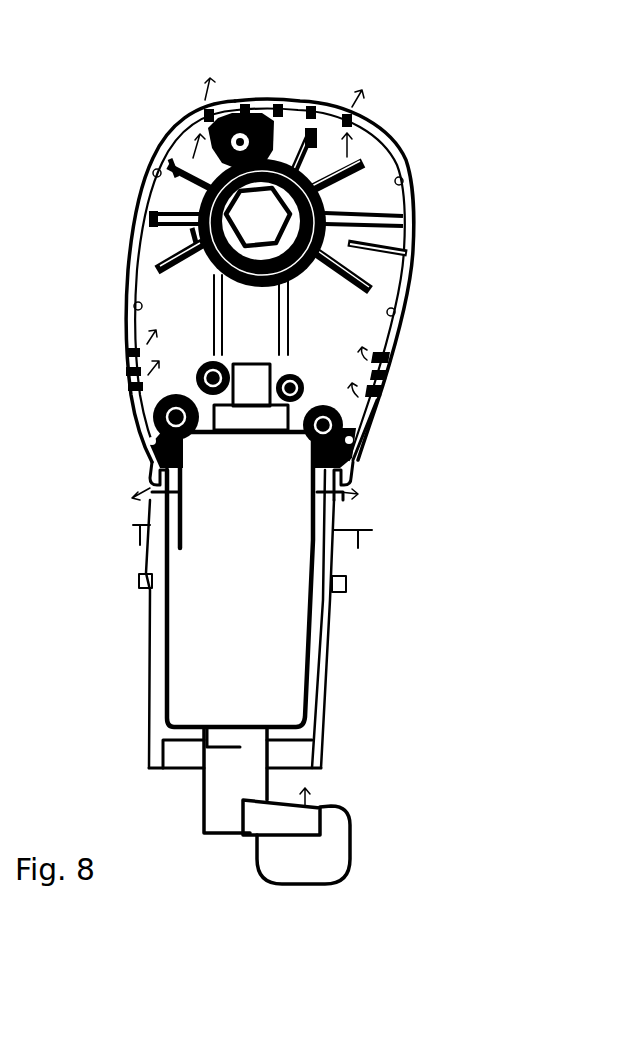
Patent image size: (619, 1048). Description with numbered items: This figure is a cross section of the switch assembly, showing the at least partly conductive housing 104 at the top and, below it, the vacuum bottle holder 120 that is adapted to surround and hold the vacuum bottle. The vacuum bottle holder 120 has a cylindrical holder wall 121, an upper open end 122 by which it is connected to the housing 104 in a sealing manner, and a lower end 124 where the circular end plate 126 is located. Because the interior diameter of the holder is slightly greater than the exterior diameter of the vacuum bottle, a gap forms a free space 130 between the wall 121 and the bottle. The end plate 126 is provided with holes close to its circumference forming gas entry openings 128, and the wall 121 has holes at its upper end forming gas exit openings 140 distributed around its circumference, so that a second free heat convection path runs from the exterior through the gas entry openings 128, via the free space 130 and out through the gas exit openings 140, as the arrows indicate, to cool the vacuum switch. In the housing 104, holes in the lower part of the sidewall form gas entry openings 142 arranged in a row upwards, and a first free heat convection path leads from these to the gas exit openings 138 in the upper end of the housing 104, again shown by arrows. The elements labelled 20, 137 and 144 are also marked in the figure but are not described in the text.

The power tool housing assembly 20 is at (235, 451).
The housing 104 is at (130, 215).
The outer wall 137 is at (186, 120).
The gas exit openings 138 is at (308, 100).
The gas entry openings 142 is at (118, 405).
The wall portion 144 is at (372, 420).
The gas exit openings 140 is at (150, 490).
The holder wall 121 is at (152, 511).
The upper open end 122 is at (343, 503).
The vacuum bottle holder 120 is at (332, 628).
The free space 130 is at (166, 654).
The lower end 124 is at (146, 750).
The gas entry openings 128 is at (163, 772).
The end plate 126 is at (185, 778).